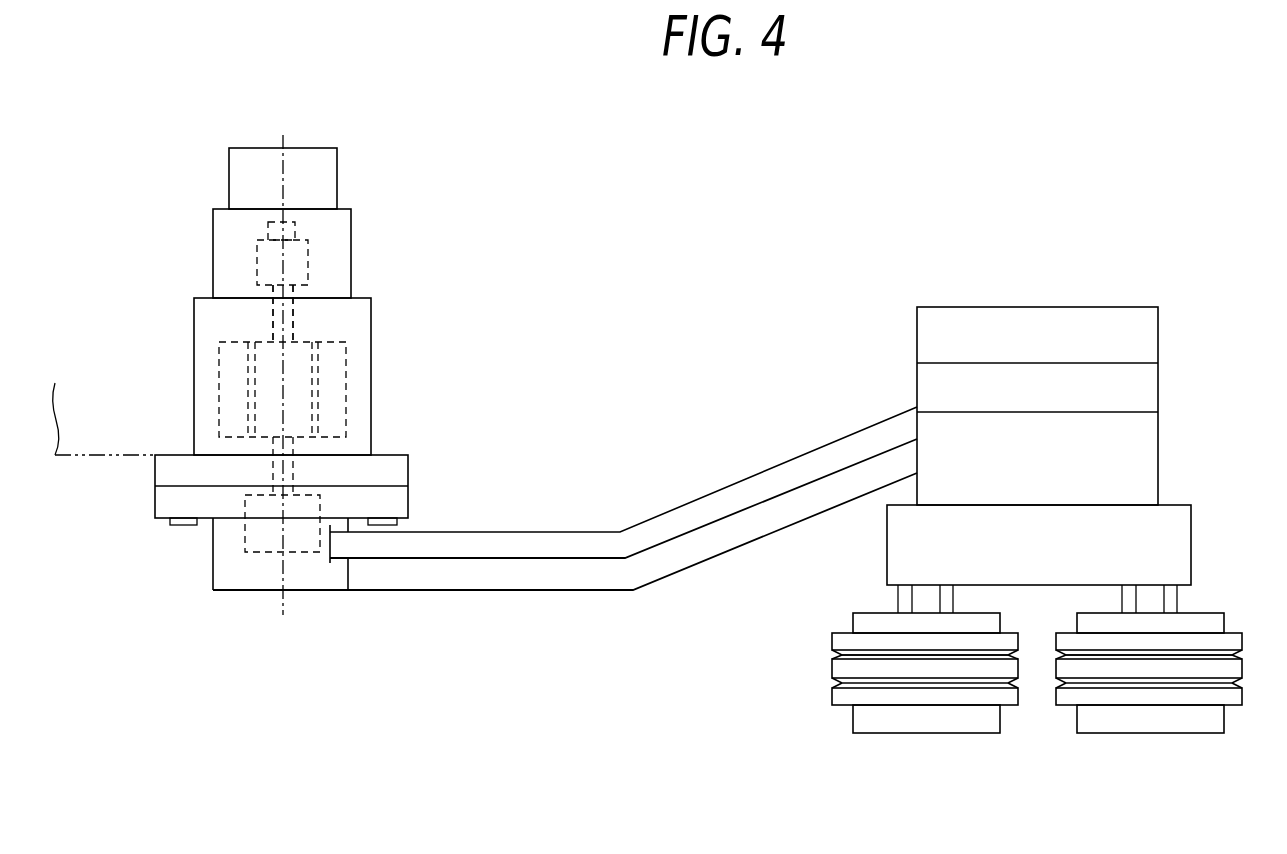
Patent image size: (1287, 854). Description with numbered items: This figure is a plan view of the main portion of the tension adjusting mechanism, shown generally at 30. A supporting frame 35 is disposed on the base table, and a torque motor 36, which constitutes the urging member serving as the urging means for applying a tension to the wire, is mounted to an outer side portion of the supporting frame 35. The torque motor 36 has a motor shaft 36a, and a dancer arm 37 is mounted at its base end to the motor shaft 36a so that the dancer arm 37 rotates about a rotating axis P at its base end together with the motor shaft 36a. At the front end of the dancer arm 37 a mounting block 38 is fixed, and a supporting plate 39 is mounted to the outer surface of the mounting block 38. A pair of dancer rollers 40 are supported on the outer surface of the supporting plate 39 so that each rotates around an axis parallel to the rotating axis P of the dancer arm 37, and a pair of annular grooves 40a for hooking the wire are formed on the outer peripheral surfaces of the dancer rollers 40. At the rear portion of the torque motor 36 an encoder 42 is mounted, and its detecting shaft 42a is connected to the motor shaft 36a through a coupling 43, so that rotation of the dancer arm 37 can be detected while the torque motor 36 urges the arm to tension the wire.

The head unit 30 is at (951, 300).
The supporting frame 35 is at (95, 460).
The torque motor 36 is at (363, 378).
The motor shaft 36a is at (300, 322).
The dancer arm 37 is at (677, 570).
The mounting block 38 is at (1158, 433).
The supporting plate 39 is at (1205, 520).
The dancer roller 40 is at (845, 707).
The annular groove 40a is at (920, 655).
The encoder 42 is at (337, 178).
The detecting shaft 42a is at (297, 227).
The coupling 43 is at (310, 273).
The rotating axis P is at (283, 612).